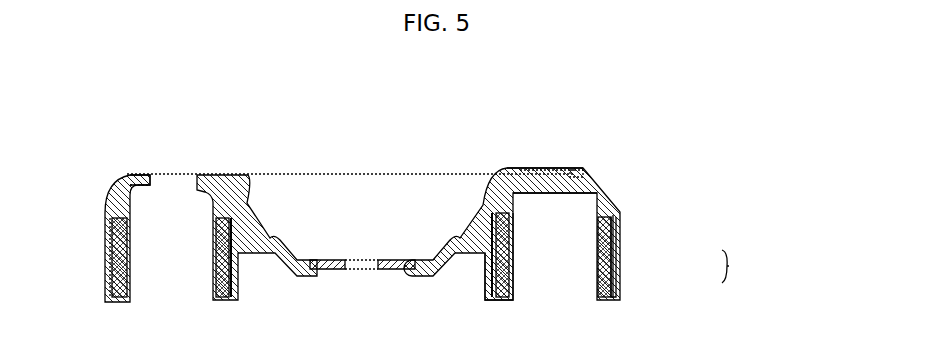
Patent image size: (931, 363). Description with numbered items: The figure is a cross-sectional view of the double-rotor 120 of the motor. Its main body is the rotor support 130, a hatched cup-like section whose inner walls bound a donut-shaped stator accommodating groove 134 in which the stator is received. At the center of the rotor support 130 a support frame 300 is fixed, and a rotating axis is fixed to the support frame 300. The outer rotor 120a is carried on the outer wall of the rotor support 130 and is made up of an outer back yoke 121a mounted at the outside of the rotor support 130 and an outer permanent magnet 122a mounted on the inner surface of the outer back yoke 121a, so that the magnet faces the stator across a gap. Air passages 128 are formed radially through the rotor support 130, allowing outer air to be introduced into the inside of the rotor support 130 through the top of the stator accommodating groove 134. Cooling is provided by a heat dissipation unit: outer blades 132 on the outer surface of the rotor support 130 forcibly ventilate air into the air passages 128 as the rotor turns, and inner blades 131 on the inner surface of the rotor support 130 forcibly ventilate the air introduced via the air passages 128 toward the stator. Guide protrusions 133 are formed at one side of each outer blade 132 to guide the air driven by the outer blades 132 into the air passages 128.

The double-rotor 120 is at (623, 188).
The air passages 128 is at (173, 185).
The rotor support 130 is at (238, 180).
The inner blades 131 is at (530, 190).
The outer blades 132 is at (543, 172).
The guide protrusions 133 is at (583, 172).
The stator accommodating groove 134 is at (510, 213).
The support frame 300 is at (332, 265).
The outer back yoke 121a is at (613, 250).
The outer permanent magnet 122a is at (613, 270).
The outer rotor 120a is at (750, 266).